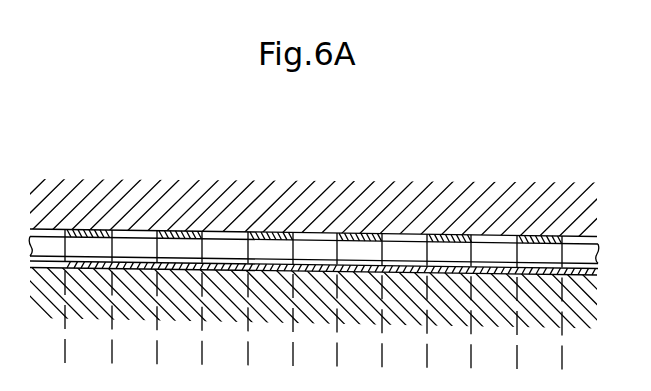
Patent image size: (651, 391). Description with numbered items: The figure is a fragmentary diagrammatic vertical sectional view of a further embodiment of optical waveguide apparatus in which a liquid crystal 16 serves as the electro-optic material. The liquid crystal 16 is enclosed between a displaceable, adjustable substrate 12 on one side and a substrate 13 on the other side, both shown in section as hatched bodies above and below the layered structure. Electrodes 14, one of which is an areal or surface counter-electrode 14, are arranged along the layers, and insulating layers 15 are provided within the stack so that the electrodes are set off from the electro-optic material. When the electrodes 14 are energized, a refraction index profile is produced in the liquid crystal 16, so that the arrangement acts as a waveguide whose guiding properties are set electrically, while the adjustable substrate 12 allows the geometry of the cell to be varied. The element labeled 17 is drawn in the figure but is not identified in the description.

The displaceable substrate 12 is at (72, 195).
The substrate 13 is at (50, 297).
The electrodes 14 is at (442, 235).
The insulating layers 15 is at (492, 241).
The liquid crystal 16 is at (600, 258).
The adhesive layer 17 is at (472, 274).